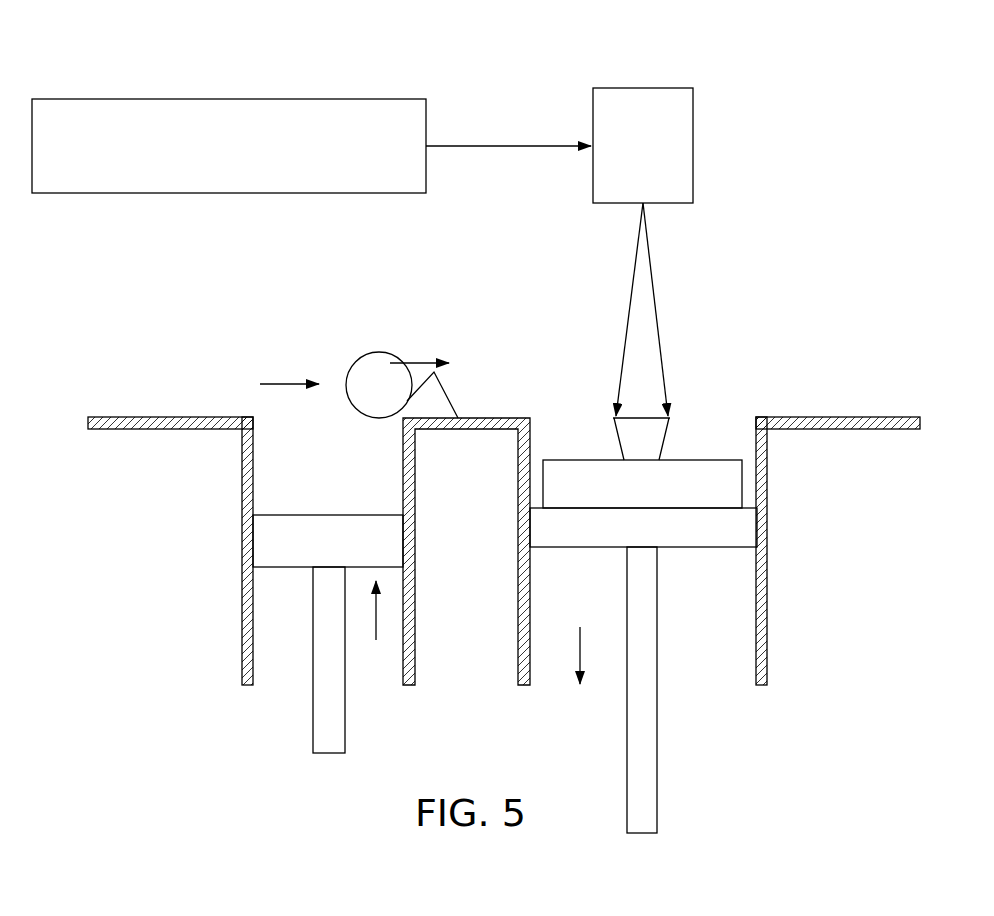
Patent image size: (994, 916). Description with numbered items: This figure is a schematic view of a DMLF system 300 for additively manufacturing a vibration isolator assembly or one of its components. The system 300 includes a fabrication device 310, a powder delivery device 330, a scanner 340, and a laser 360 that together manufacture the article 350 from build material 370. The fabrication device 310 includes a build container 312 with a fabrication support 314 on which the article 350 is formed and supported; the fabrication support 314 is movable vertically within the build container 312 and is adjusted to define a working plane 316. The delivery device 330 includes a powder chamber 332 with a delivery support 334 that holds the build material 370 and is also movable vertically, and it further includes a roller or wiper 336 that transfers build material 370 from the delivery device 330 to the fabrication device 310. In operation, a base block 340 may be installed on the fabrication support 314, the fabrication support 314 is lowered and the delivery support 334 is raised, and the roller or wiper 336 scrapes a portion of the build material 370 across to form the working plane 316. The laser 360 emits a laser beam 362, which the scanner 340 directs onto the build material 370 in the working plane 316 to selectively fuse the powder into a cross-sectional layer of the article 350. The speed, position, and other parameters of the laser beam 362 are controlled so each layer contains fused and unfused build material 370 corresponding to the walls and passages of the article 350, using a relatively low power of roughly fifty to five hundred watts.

The DMLF system 300 is at (818, 110).
The fabrication device 310 is at (797, 560).
The build container 312 is at (767, 448).
The fabrication support 314 is at (708, 548).
The working plane 316 is at (736, 420).
The powder delivery device 330 is at (158, 532).
The powder chamber 332 is at (247, 480).
The delivery support 334 is at (262, 538).
The roller or wiper 336 is at (380, 352).
The scanner 340 is at (643, 88).
The article 350 is at (604, 418).
The laser 360 is at (237, 97).
The laser beam 362 is at (513, 145).
The build material 370 is at (262, 457).